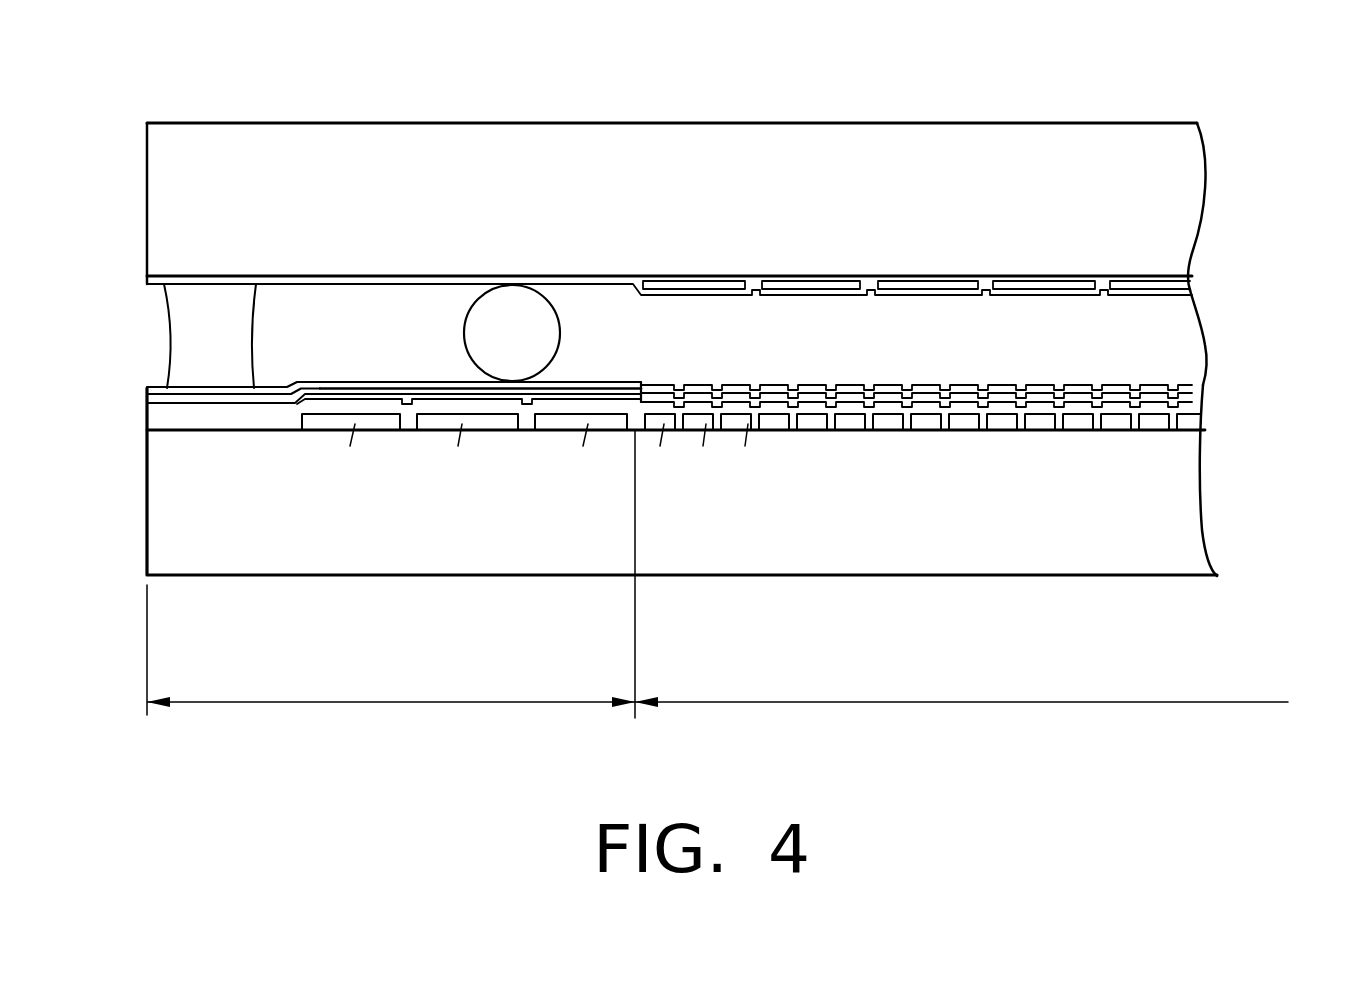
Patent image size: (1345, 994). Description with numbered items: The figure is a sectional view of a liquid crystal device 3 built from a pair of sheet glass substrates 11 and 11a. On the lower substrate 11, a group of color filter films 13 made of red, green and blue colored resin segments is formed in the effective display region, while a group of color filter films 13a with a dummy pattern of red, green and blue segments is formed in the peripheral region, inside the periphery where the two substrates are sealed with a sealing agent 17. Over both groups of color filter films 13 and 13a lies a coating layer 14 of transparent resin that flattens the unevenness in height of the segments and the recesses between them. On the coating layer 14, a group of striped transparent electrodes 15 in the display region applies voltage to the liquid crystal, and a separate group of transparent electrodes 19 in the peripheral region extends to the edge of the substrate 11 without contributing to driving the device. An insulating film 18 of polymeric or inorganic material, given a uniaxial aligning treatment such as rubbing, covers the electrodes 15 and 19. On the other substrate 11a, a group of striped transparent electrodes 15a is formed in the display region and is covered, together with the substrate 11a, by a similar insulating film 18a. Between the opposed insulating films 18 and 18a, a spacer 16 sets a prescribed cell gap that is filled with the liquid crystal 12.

The liquid crystal device 3 is at (314, 122).
The substrate 11 is at (853, 548).
The substrate 11a is at (990, 156).
The liquid crystal 12 is at (1170, 330).
The group of color filter films 13 is at (1160, 433).
The group of color filter films 13a is at (500, 428).
The coating layer 14 is at (1200, 428).
The group of transparent electrodes 15 is at (1197, 395).
The group of transparent electrodes 15a is at (1155, 276).
The spacer 16 is at (490, 343).
The sealing agent 17 is at (196, 365).
The insulating film 18 is at (1190, 384).
The insulating film 18a is at (1180, 296).
The group of transparent electrodes 19 is at (318, 395).